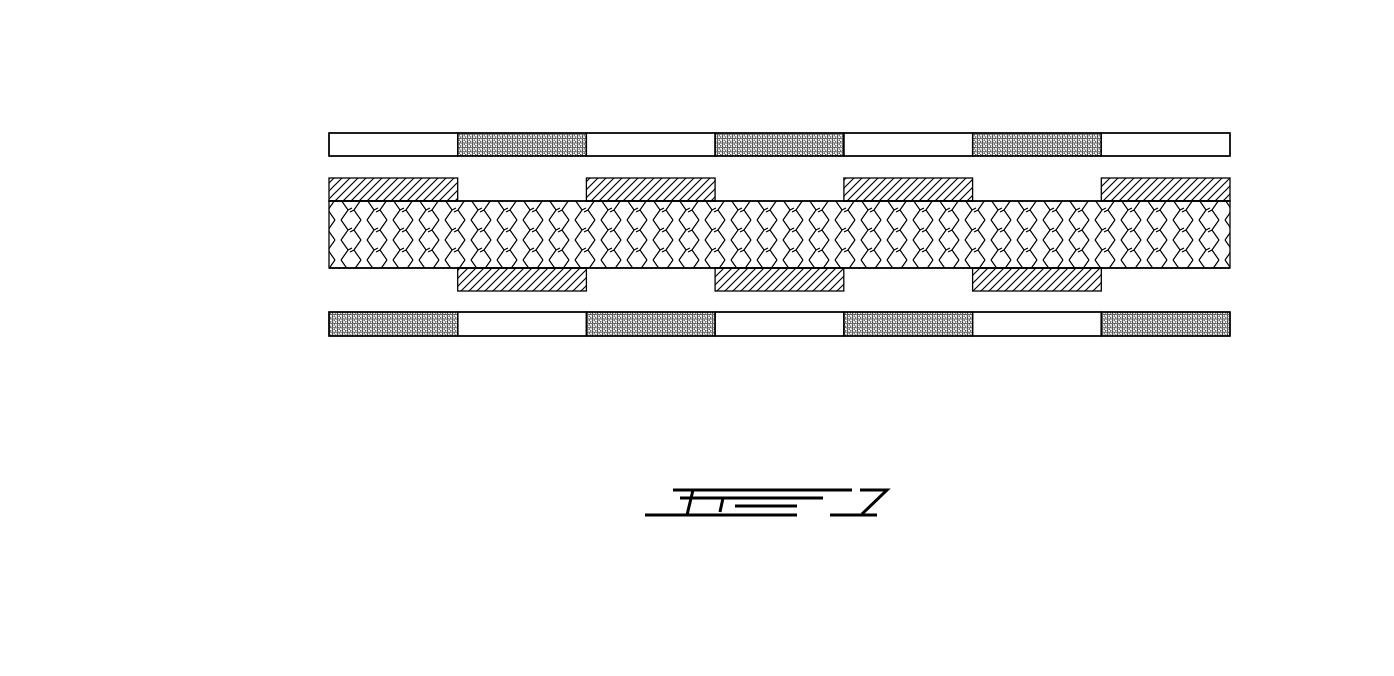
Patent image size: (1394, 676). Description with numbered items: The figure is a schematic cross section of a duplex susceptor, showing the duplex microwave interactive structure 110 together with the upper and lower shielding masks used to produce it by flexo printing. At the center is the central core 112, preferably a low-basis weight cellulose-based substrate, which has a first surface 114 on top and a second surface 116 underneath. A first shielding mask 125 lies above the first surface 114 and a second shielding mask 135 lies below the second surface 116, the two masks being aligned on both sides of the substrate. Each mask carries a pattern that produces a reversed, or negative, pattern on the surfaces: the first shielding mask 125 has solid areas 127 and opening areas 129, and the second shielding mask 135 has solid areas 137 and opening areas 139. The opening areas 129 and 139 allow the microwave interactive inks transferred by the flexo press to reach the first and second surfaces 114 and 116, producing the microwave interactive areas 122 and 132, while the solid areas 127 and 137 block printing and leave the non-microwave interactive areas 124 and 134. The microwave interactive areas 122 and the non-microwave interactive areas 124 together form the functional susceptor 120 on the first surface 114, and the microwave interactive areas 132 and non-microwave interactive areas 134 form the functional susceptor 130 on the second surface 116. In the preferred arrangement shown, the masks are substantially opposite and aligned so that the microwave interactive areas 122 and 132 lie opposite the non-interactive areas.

The duplex microwave interactive structure 110 is at (750, 229).
The central core 112 is at (679, 247).
The first surface 114 is at (495, 200).
The second surface 116 is at (354, 268).
The functional susceptor 120 is at (728, 116).
The microwave interactive areas 122 is at (393, 178).
The non-microwave interactive areas 124 is at (775, 192).
The first shielding mask 125 is at (716, 93).
The solid areas 127 is at (482, 135).
The opening areas 129 is at (606, 145).
The functional susceptor 130 is at (773, 347).
The microwave interactive areas 132 is at (560, 278).
The non-microwave interactive areas 134 is at (645, 273).
The second shielding mask 135 is at (732, 369).
The solid areas 137 is at (383, 336).
The opening areas 139 is at (515, 323).